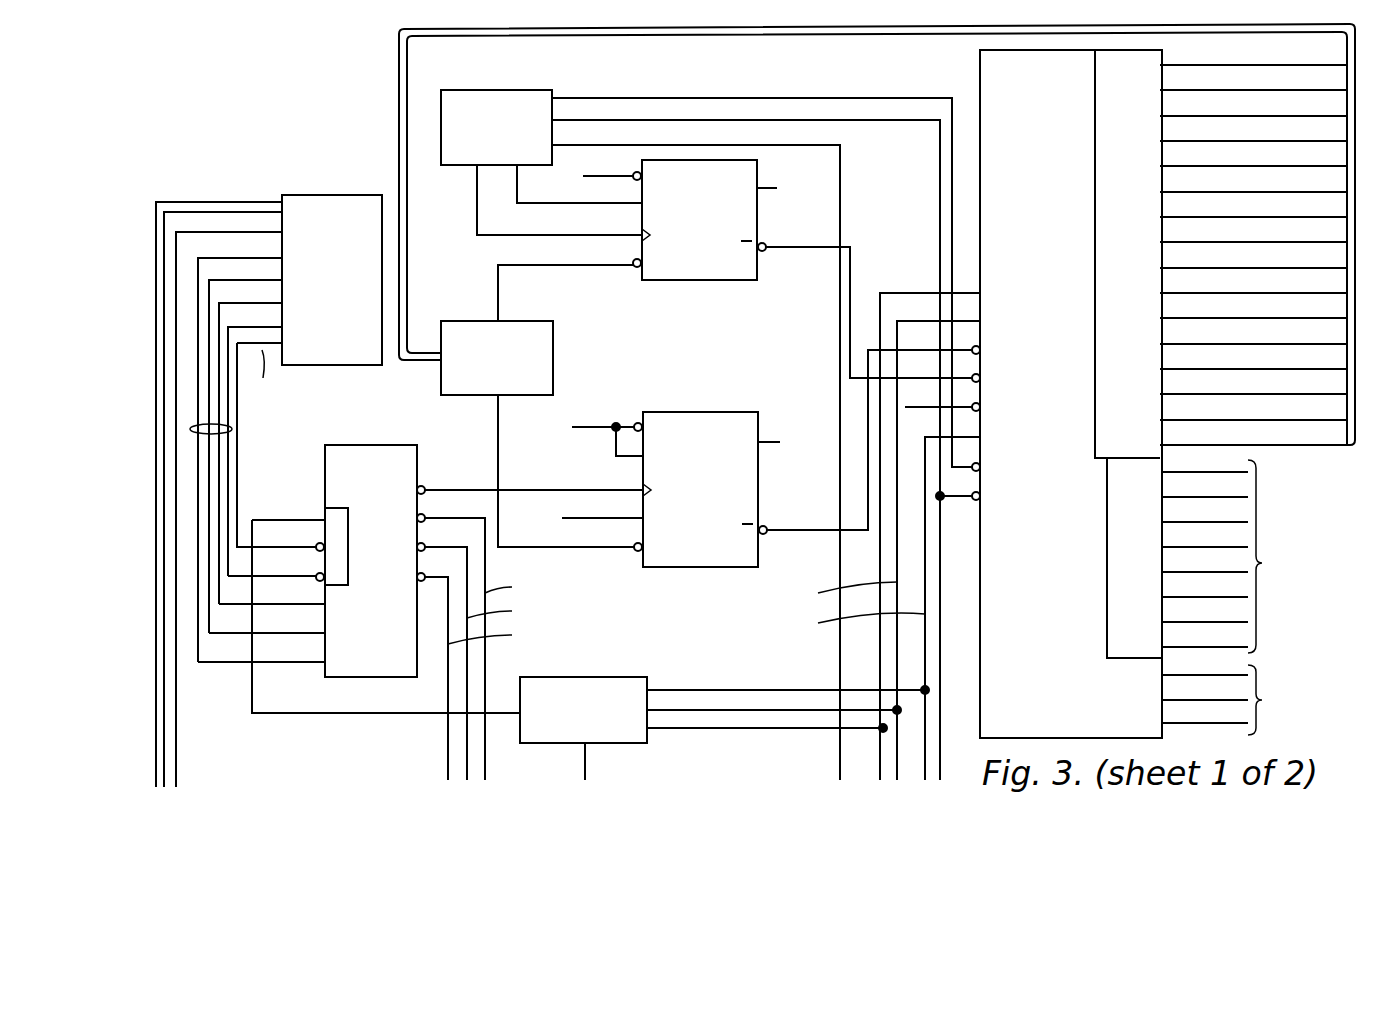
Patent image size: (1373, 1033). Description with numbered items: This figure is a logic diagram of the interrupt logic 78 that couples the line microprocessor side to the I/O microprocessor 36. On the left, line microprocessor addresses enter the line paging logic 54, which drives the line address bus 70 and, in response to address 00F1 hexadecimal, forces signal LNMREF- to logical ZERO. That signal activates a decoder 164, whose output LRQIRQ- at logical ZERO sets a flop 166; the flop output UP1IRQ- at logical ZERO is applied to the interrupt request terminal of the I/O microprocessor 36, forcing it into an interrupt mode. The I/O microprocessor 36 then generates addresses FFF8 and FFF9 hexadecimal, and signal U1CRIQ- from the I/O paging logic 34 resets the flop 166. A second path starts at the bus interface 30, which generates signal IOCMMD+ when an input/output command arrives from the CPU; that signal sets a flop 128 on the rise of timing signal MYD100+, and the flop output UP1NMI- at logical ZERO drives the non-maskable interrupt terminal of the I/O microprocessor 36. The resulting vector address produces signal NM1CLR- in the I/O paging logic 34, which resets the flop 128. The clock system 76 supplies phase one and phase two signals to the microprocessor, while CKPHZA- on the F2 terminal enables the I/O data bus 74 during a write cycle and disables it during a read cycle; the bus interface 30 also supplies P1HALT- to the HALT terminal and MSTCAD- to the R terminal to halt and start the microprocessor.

The interrupt logic 78 is at (341, 73).
The bus interface 30 is at (500, 90).
The I/O microprocessor 36 is at (978, 57).
The I/O paging logic 34 is at (553, 343).
The line paging logic 54 is at (355, 365).
The line address bus 70 is at (232, 429).
The decoder 164 is at (375, 445).
The flop 128 is at (730, 280).
The flop 166 is at (705, 412).
The clock system 76 is at (587, 677).
The I/O data bus 74 is at (1250, 552).